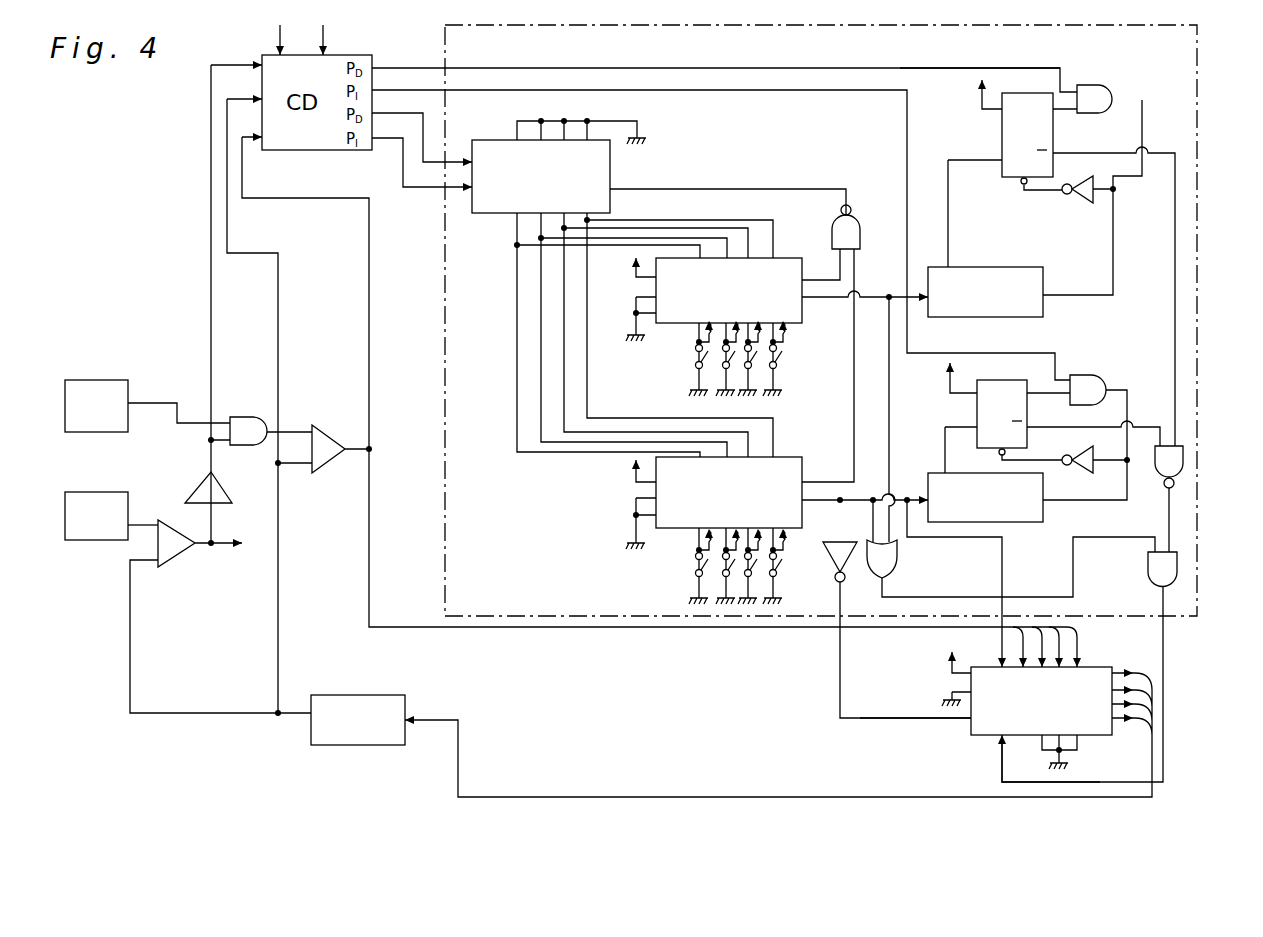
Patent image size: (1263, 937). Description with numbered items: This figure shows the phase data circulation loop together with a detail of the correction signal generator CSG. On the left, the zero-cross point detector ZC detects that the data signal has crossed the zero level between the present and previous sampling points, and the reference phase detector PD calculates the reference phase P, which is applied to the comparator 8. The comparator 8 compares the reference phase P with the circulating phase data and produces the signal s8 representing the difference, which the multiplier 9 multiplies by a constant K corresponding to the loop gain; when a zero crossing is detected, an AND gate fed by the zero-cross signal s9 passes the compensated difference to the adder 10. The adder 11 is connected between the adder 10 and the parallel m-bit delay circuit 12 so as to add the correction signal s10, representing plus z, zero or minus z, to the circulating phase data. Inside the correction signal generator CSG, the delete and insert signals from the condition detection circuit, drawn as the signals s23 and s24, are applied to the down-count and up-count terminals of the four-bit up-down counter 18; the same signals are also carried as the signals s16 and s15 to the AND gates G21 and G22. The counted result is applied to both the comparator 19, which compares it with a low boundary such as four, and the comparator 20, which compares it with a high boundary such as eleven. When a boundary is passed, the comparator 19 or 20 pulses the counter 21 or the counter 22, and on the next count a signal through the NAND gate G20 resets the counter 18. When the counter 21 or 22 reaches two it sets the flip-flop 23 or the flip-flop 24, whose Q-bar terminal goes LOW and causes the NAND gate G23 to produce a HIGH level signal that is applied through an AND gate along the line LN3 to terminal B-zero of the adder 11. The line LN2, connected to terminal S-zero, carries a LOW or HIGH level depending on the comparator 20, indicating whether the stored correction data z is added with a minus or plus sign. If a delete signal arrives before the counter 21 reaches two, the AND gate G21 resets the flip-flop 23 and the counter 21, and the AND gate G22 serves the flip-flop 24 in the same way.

The correction signal generator CSG is at (445, 28).
The signal from comparator 8 s8 is at (266, 40).
The signal s9 is at (160, 403).
The signal s16 is at (1020, 68).
The signal s15 is at (1040, 353).
The signal s23 is at (458, 162).
The signal s24 is at (458, 187).
The correction signal s10 is at (1163, 636).
The 4-bit up-down counter 18 is at (610, 175).
The comparator 19 is at (798, 258).
The comparator 20 is at (806, 457).
The NAND gate G20 is at (852, 215).
The AND gate G21 is at (1094, 92).
The AND gate G22 is at (1090, 383).
The NAND gate G23 is at (1178, 462).
The counter 21 is at (993, 267).
The counter 22 is at (1020, 522).
The flip-flop 23 is at (1002, 142).
The flip-flop 24 is at (977, 413).
The adder 11 is at (971, 728).
The line LN2 is at (890, 718).
The line LN3 is at (1002, 770).
The parallel m-bit delay circuit 12 is at (355, 745).
The zero-cross point detector ZC is at (96, 406).
The reference phase detector PD is at (96, 516).
The reference phase P is at (148, 525).
The comparator 8 is at (180, 556).
The multiplier 9 is at (218, 487).
The adder 10 is at (333, 425).